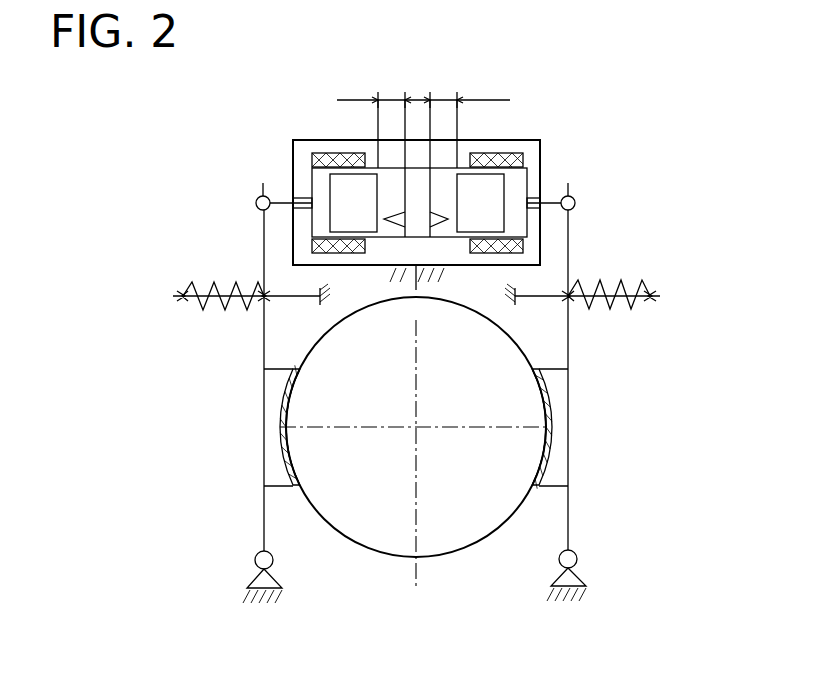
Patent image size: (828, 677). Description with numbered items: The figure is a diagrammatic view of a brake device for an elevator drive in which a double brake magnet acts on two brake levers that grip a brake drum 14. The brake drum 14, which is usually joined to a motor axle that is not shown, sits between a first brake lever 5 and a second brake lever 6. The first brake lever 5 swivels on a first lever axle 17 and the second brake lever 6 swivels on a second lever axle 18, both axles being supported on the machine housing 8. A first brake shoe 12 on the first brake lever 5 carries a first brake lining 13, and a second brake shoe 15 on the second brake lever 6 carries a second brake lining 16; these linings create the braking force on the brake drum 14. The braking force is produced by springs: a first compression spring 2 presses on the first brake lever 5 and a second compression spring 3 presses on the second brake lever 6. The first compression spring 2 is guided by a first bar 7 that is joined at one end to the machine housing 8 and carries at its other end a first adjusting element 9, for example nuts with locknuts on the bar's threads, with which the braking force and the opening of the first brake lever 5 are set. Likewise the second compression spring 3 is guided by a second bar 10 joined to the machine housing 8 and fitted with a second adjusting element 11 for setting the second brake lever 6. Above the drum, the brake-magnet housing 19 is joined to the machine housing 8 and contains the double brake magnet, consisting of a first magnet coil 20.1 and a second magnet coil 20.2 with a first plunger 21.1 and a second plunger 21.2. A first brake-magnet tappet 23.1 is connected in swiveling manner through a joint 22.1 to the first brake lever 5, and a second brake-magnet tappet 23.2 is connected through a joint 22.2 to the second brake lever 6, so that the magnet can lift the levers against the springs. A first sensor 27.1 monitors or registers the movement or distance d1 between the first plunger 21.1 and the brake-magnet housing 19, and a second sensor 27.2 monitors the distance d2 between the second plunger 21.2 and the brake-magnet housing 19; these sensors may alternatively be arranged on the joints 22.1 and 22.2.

The first compression spring 2 is at (625, 300).
The second compression spring 3 is at (207, 306).
The first brake lever 5 is at (568, 430).
The second brake lever 6 is at (263, 500).
The first bar 7 is at (660, 298).
The machine housing 8 is at (398, 280).
The first adjusting element 9 is at (572, 298).
The second bar 10 is at (173, 297).
The second adjusting element 11 is at (185, 293).
The first brake shoe 12 is at (553, 483).
The first brake lining 13 is at (533, 470).
The brake drum 14 is at (390, 523).
The second brake shoe 15 is at (275, 381).
The second brake lining 16 is at (303, 470).
The first lever axle 17 is at (560, 560).
The second lever axle 18 is at (255, 560).
The brake-magnet housing 19 is at (477, 140).
The first magnet coil 20.1 is at (523, 160).
The second magnet coil 20.2 is at (382, 219).
The first plunger 21.1 is at (493, 183).
The second plunger 21.2 is at (352, 192).
The joint 22.1 is at (575, 200).
The joint 22.2 is at (256, 203).
The first brake-magnet tappet 23.1 is at (550, 207).
The second brake-magnet tappet 23.2 is at (277, 203).
The first sensor 27.1 is at (505, 232).
The second sensor 27.2 is at (330, 202).
The distance d1 is at (447, 98).
The distance d2 is at (393, 97).